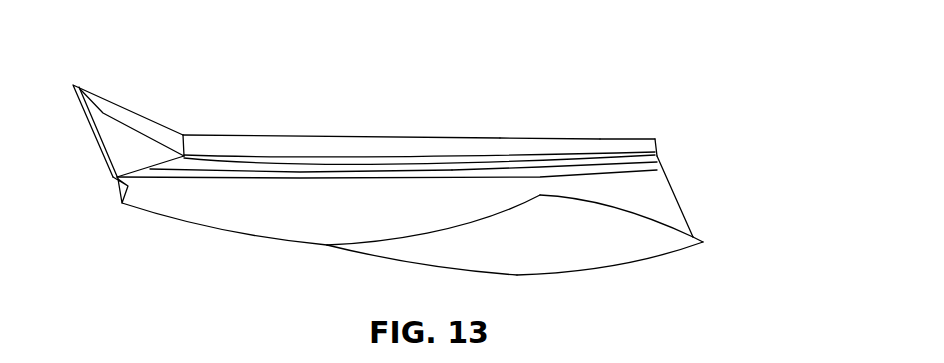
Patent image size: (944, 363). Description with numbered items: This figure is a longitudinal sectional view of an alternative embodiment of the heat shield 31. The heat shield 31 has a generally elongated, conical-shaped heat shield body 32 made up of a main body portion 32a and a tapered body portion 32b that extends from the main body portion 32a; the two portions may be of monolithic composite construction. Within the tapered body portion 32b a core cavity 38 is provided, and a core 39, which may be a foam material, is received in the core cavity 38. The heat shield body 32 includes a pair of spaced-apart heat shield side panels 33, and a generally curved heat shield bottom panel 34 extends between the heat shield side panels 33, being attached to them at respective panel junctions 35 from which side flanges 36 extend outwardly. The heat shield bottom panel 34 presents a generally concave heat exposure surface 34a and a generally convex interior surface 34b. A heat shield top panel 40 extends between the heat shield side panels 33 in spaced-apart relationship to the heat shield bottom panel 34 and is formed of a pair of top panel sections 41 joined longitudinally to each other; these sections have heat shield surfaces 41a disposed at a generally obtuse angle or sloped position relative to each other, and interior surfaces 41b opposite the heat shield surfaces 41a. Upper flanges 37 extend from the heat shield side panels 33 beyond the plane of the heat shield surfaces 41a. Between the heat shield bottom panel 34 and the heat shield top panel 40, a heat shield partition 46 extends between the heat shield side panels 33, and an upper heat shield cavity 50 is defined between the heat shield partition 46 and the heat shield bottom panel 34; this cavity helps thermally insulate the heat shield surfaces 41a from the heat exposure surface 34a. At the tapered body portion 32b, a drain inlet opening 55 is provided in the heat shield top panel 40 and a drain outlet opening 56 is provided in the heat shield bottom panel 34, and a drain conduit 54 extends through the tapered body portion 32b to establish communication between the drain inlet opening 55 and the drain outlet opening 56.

The heat shield 31 is at (636, 100).
The heat shield body 32 is at (498, 128).
The main body portion 32a is at (646, 130).
The tapered body portion 32b is at (112, 97).
The heat shield side panels 33 is at (682, 212).
The heat shield bottom panel 34 is at (657, 158).
The heat exposure surface 34a is at (518, 198).
The interior surface 34b is at (655, 214).
The panel junctions 35 is at (693, 234).
The side flanges 36 is at (590, 268).
The upper flanges 37 is at (403, 145).
The core cavity 38 is at (116, 138).
The core 39 is at (122, 155).
The heat shield top panel 40 is at (589, 150).
The top panel sections 41 is at (452, 165).
The heat shield surfaces 41a is at (555, 163).
The interior surfaces 41b is at (400, 172).
The heat shield partition 46 is at (367, 179).
The upper heat shield cavity 50 is at (285, 152).
The drain conduit 54 is at (143, 172).
The drain inlet opening 55 is at (184, 134).
The drain outlet opening 56 is at (113, 178).